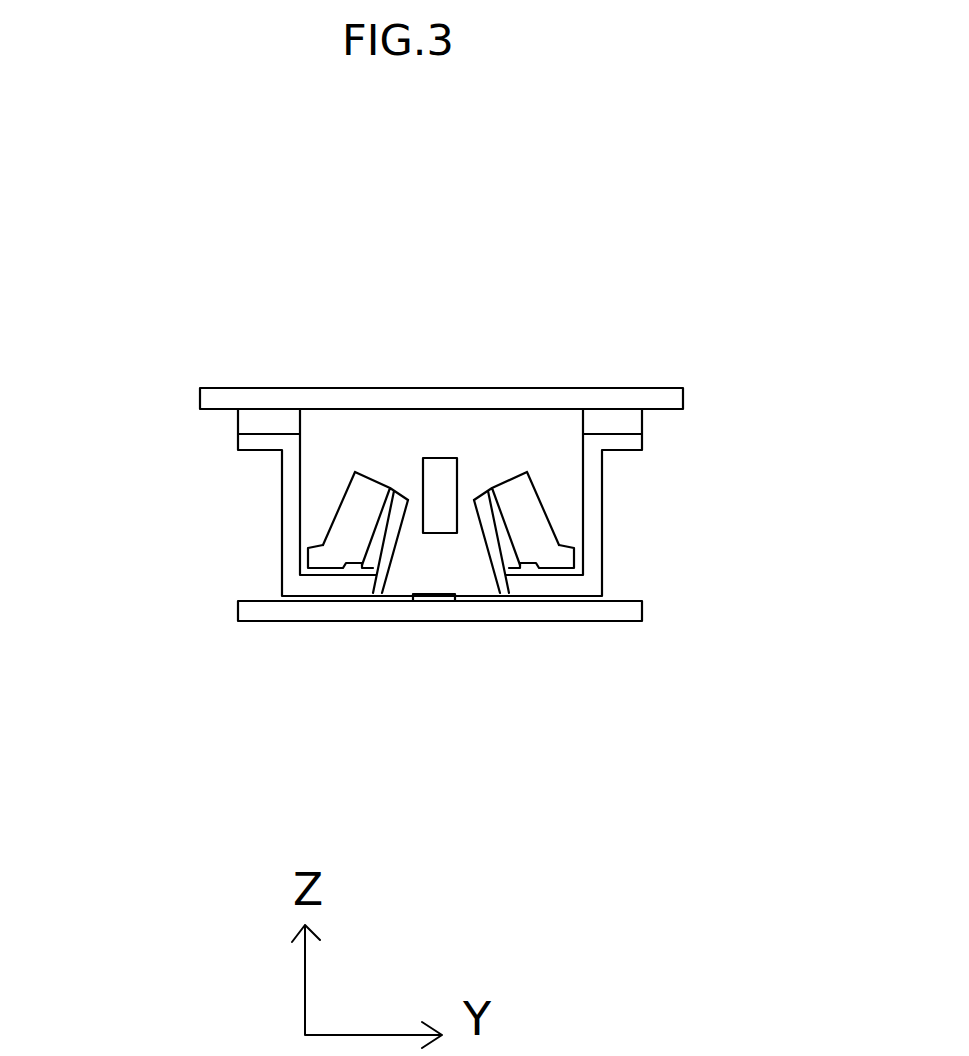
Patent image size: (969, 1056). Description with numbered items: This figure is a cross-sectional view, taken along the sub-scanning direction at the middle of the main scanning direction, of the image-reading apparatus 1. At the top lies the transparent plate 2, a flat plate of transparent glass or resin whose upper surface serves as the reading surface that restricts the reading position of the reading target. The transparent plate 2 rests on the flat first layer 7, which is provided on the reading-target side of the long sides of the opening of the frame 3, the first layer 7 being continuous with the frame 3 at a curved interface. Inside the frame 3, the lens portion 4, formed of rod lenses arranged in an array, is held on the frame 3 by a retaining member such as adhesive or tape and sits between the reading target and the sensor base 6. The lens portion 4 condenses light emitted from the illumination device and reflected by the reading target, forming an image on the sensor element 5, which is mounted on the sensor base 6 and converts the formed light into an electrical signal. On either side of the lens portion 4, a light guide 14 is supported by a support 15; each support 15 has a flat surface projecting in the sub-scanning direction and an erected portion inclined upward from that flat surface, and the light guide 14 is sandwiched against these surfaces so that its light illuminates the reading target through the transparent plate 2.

The connector 1 is at (448, 468).
The transparent plate 2 is at (320, 408).
The frame 3 is at (288, 533).
The lens portion 4 is at (437, 477).
The sensor element 5 is at (440, 597).
The sensor base 6 is at (298, 610).
The first layer 7 is at (267, 421).
The light guide 14 is at (533, 527).
The support 15 is at (532, 575).